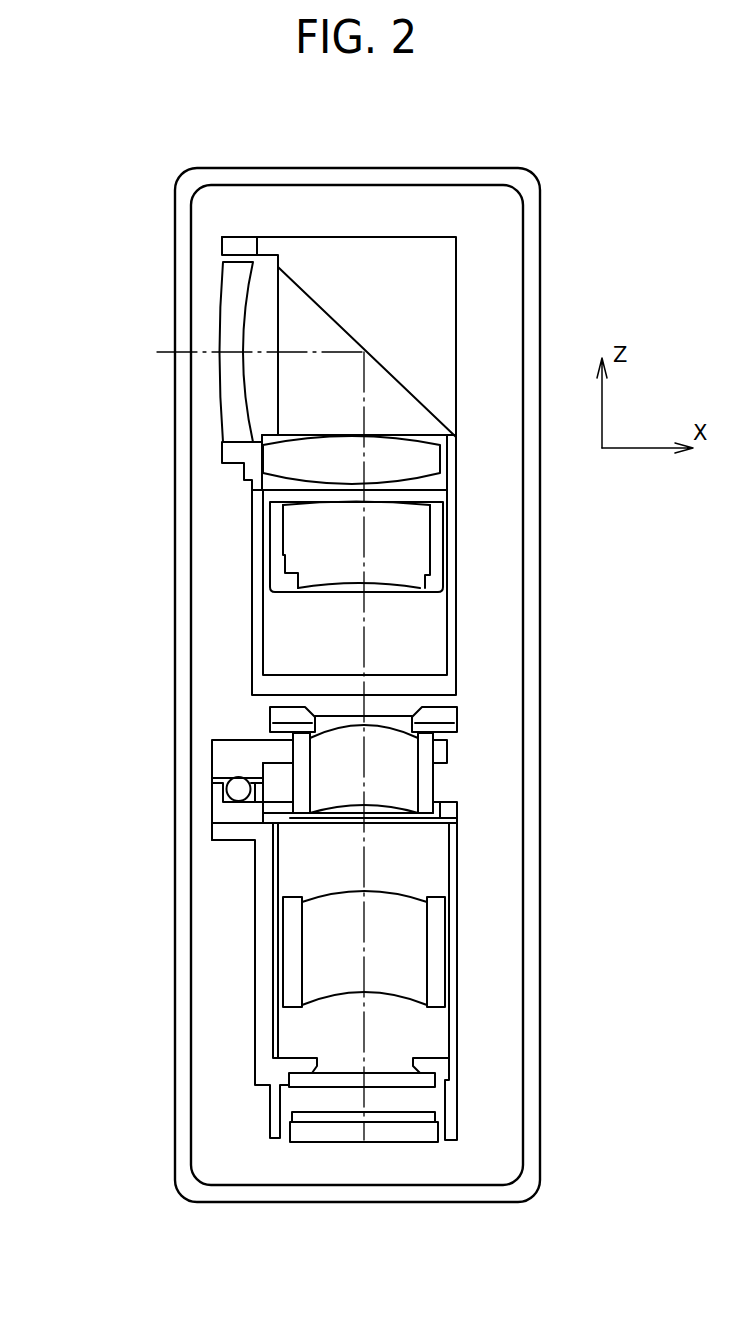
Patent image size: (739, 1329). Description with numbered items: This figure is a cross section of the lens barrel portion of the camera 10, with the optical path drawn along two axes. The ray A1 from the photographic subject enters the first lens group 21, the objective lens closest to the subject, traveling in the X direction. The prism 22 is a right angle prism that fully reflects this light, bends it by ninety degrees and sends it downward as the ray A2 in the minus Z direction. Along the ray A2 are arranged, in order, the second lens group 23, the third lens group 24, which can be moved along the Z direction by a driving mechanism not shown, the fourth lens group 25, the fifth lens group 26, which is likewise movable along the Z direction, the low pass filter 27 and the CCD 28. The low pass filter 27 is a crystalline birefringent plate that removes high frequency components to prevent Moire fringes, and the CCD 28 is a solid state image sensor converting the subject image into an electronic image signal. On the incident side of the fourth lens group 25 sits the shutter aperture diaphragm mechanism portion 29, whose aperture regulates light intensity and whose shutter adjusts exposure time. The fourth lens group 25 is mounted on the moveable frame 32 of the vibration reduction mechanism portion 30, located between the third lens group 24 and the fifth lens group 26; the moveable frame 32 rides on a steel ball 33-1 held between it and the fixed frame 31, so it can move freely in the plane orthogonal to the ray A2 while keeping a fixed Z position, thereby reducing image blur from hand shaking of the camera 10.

The camera 10 is at (183, 185).
The first lens group 21 is at (227, 307).
The prism 22 is at (310, 317).
The second lens group 23 is at (288, 462).
The third lens group 24 is at (290, 538).
The fourth lens group 25 is at (397, 748).
The fifth lens group 26 is at (397, 926).
The low pass filter 27 is at (389, 1080).
The CCD 28 is at (389, 1130).
The shutter aperture diaphragm mechanism portion 29 is at (382, 717).
The vibration reduction mechanism portion 30 is at (78, 725).
The fixed frame 31 is at (235, 812).
The moveable frame 32 is at (233, 762).
The steel ball 33-1 is at (233, 788).
The ray from the photographic subject A1 is at (177, 350).
The ray bent by the prism A2 is at (365, 621).